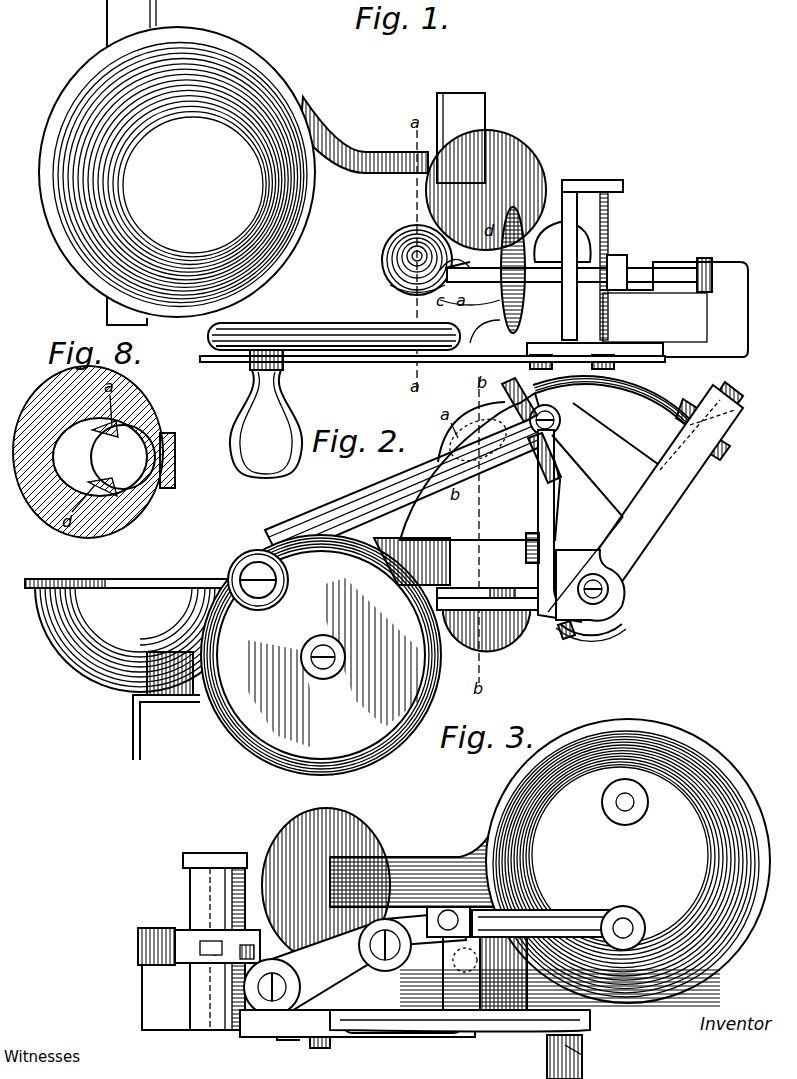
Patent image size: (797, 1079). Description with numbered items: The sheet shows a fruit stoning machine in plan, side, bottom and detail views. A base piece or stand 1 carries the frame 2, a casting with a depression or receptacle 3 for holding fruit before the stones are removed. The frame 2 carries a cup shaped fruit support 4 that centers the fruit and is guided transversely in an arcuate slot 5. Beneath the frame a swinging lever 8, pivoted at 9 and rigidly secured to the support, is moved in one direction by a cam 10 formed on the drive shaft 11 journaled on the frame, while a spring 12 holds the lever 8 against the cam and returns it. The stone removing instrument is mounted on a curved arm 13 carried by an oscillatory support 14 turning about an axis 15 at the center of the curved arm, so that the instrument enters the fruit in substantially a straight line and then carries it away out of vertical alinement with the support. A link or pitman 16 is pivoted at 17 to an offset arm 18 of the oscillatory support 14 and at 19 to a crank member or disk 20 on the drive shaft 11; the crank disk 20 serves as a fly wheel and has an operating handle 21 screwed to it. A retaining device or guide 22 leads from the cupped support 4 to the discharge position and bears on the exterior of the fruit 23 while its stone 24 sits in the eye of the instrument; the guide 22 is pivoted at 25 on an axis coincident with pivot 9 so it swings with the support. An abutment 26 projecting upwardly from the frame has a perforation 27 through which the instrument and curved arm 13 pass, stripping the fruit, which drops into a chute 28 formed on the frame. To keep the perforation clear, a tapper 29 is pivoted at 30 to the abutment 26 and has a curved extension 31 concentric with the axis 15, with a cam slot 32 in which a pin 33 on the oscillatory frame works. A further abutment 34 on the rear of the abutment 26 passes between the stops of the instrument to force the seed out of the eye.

In FIG. 1, the base piece or stand 1 is at (480, 120).
In FIG. 2, the base piece or stand 1 is at (133, 705).
In FIG. 1, the frame 2 is at (364, 169).
In FIG. 2, the frame 2 is at (190, 587).
In FIG. 3, the frame 2 is at (440, 856).
In FIG. 1, the depression or receptacle 3 is at (177, 172).
In FIG. 2, the depression or receptacle 3 is at (140, 639).
In FIG. 3, the depression or receptacle 3 is at (628, 861).
In FIG. 1, the fruit support 4 is at (382, 256).
In FIG. 2, the fruit support 4 is at (450, 556).
In FIG. 1, the arcuate slot 5 is at (400, 292).
In FIG. 3, the swinging lever 8 is at (369, 962).
In FIG. 3, the pivot 9 is at (282, 988).
In FIG. 3, the cam 10 is at (492, 1033).
In FIG. 2, the drive shaft 11 is at (325, 678).
In FIG. 3, the drive shaft 11 is at (440, 1035).
In FIG. 3, the spring 12 is at (518, 938).
In FIG. 1, the curved arm 13 is at (652, 272).
In FIG. 2, the curved arm 13 is at (660, 395).
In FIG. 1, the oscillatory support 14 is at (672, 342).
In FIG. 2, the oscillatory support 14 is at (668, 500).
In FIG. 3, the oscillatory support 14 is at (152, 1013).
In FIG. 1, the axis 15 is at (616, 364).
In FIG. 2, the axis 15 is at (610, 590).
In FIG. 1, the link or pitman 16 is at (356, 362).
In FIG. 2, the link or pitman 16 is at (375, 510).
In FIG. 3, the link or pitman 16 is at (386, 1040).
In FIG. 1, the pivot 17 is at (528, 364).
In FIG. 2, the pivot 17 is at (551, 425).
In FIG. 3, the pivot 17 is at (320, 1049).
In FIG. 1, the offset arm 18 is at (590, 350).
In FIG. 2, the offset arm 18 is at (630, 455).
In FIG. 1, the pivot 19 is at (283, 366).
In FIG. 3, the pivot 19 is at (584, 1042).
In FIG. 1, the crank member or disk 20 is at (325, 333).
In FIG. 2, the crank member or disk 20 is at (321, 655).
In FIG. 3, the crank member or disk 20 is at (540, 1032).
In FIG. 2, the operating handle 21 is at (254, 608).
In FIG. 3, the operating handle 21 is at (585, 1075).
In FIG. 1, the retaining device or guide 22 is at (470, 310).
In FIG. 8, the retaining device or guide 22 is at (177, 470).
In FIG. 2, the retaining device or guide 22 is at (422, 524).
In FIG. 1, the fruit 23 is at (485, 333).
In FIG. 8, the fruit 23 is at (152, 415).
In FIG. 8, the stone 24 is at (138, 447).
In FIG. 2, the pivot 25 is at (566, 403).
In FIG. 1, the abutment 26 is at (527, 235).
In FIG. 2, the abutment 26 is at (522, 440).
In FIG. 1, the perforation 27 is at (562, 242).
In FIG. 1, the chute 28 is at (510, 148).
In FIG. 2, the chute 28 is at (498, 655).
In FIG. 3, the chute 28 is at (326, 885).
In FIG. 2, the tapper 29 is at (538, 496).
In FIG. 2, the pivot 30 is at (526, 540).
In FIG. 1, the curved extension 31 is at (615, 258).
In FIG. 2, the curved extension 31 is at (596, 634).
In FIG. 3, the curved extension 31 is at (246, 958).
In FIG. 3, the cam slot 32 is at (196, 935).
In FIG. 2, the pin 33 is at (560, 638).
In FIG. 3, the pin 33 is at (212, 952).
In FIG. 1, the abutment 34 is at (583, 250).
In FIG. 2, the abutment 34 is at (560, 418).